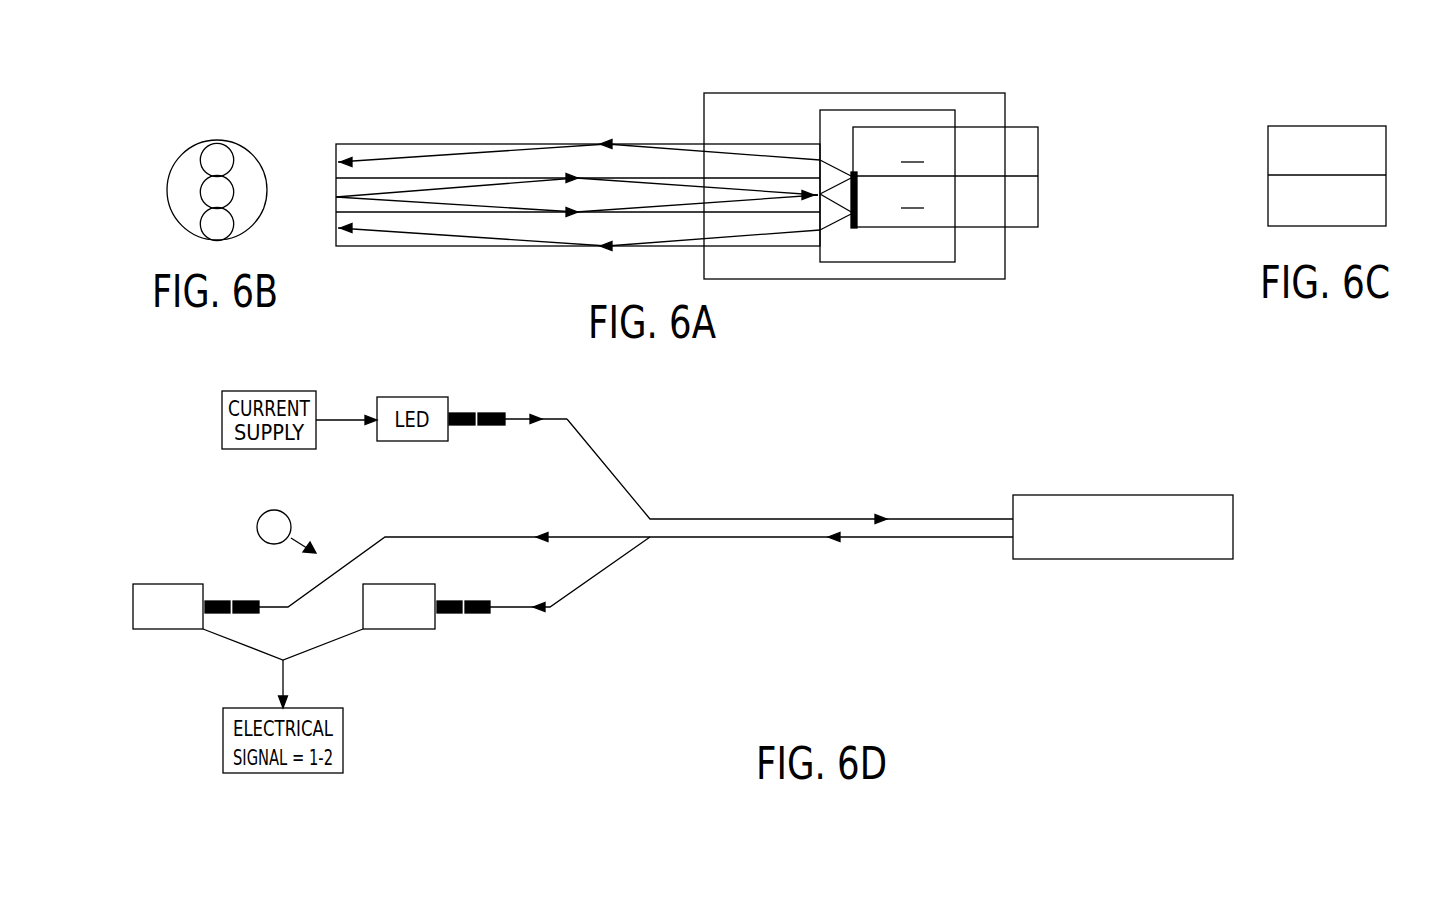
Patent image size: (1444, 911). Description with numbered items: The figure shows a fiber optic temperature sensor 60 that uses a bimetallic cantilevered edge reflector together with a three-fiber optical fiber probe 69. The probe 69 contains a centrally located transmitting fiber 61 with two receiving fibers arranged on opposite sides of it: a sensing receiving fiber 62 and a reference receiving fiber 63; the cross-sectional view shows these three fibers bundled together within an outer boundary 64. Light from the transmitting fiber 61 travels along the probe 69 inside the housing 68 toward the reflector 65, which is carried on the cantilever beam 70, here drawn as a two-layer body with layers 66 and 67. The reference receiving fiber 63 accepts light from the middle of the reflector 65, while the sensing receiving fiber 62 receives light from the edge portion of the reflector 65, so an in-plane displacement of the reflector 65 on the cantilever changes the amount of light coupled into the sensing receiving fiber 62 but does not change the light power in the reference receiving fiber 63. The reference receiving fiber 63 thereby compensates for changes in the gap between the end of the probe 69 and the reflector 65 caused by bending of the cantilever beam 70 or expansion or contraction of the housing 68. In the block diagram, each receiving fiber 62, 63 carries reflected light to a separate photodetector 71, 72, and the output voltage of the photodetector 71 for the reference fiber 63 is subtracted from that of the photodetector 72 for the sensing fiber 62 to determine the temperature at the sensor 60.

In FIG. 6A, the fiber optic temperature sensor 60 is at (716, 76).
In FIG. 6D, the fiber optic temperature sensor 60 is at (1123, 495).
In FIG. 6B, the transmitting fiber 61 is at (222, 190).
In FIG. 6B, the sensing receiving fiber 62 is at (216, 155).
In FIG. 6B, the reference receiving fiber 63 is at (210, 224).
In FIG. 6B, the fiber bundle sheath 64 is at (258, 155).
In FIG. 6A, the reflector 65 is at (851, 224).
In FIG. 6A, the lower sensor layer 66 is at (945, 192).
In FIG. 6C, the lower sensor layer 66 is at (1375, 205).
In FIG. 6A, the upper sensor layer 67 is at (912, 150).
In FIG. 6C, the upper sensor layer 67 is at (1374, 155).
In FIG. 6A, the housing 68 is at (965, 263).
In FIG. 6A, the optical fiber probe 69 is at (404, 144).
In FIG. 6A, the cantilever beam 70 is at (976, 155).
In FIG. 6C, the cantilever beam 70 is at (1350, 135).
In FIG. 6D, the photodetector 71 is at (397, 630).
In FIG. 6D, the photodetector 72 is at (168, 630).